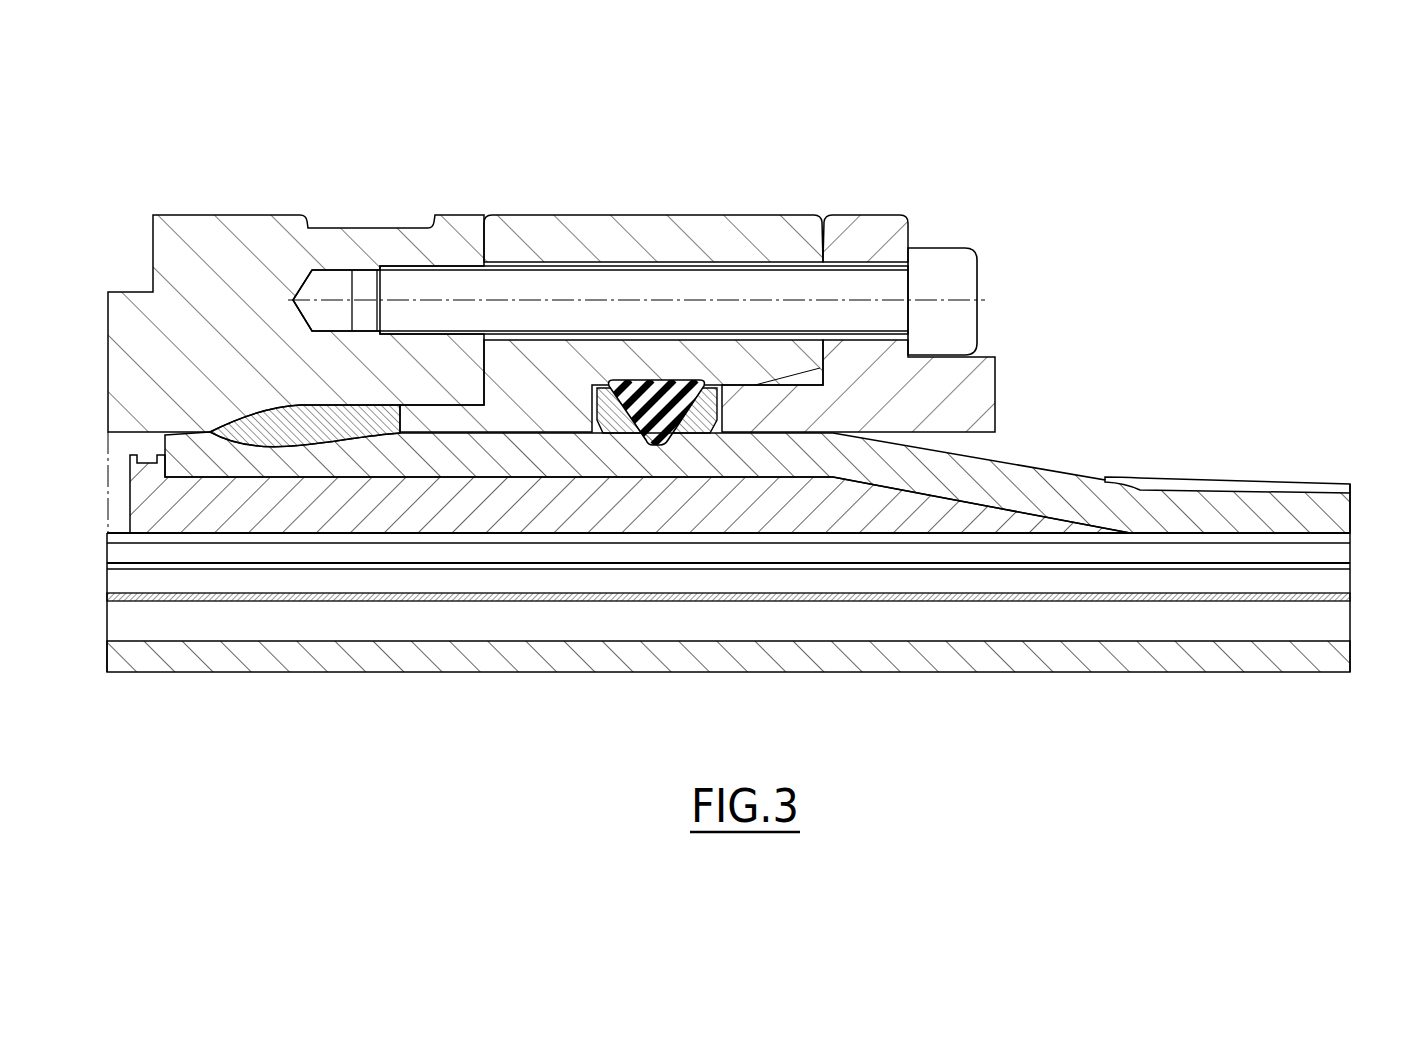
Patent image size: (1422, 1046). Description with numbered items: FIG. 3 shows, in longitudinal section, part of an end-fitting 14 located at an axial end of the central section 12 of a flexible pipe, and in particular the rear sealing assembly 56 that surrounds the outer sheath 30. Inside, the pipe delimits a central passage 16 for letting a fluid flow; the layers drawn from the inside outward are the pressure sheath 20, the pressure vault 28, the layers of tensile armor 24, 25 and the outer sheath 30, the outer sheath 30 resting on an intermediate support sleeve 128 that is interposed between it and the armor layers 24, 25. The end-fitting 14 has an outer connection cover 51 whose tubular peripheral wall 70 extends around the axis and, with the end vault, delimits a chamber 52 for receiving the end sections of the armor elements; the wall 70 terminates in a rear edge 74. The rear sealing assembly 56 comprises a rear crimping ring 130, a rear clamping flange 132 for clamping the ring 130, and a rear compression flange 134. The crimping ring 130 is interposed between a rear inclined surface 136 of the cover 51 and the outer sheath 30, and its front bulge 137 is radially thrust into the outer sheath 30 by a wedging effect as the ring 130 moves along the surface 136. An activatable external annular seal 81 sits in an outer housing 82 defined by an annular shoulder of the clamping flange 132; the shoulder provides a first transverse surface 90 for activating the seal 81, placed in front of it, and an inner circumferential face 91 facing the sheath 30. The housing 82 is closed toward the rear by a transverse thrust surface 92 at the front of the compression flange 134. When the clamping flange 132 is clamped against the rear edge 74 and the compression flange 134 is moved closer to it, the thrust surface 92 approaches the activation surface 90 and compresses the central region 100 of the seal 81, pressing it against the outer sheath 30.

The end-fitting 14 is at (1341, 152).
The central section 12 is at (1340, 436).
The rear sealing assembly 56 is at (730, 176).
The outer connection cover 51 is at (228, 198).
The tubular peripheral wall 70 is at (172, 214).
The rear inclined surface 136 is at (284, 405).
The rear edge 74 is at (498, 214).
The rear clamping flange 132 is at (552, 214).
The outer housing 82 is at (582, 402).
The central region 100 is at (655, 400).
The inner circumferential face 91 is at (710, 388).
The rear compression flange 134 is at (864, 214).
The first transverse surface 90 is at (612, 440).
The central passage 16 is at (632, 706).
The external annular seal 81 is at (685, 458).
The transverse thrust surface 92 is at (710, 433).
The outer sheath 30 is at (1332, 514).
The intermediate support sleeve 128 is at (375, 533).
The chamber 52 is at (124, 468).
The rear crimping ring 130 is at (248, 447).
The front bulge 137 is at (318, 447).
The tensile armor layer 25 is at (1332, 556).
The tensile armor layer 24 is at (1332, 588).
The pressure vault 28 is at (1332, 624).
The pressure sheath 20 is at (150, 655).